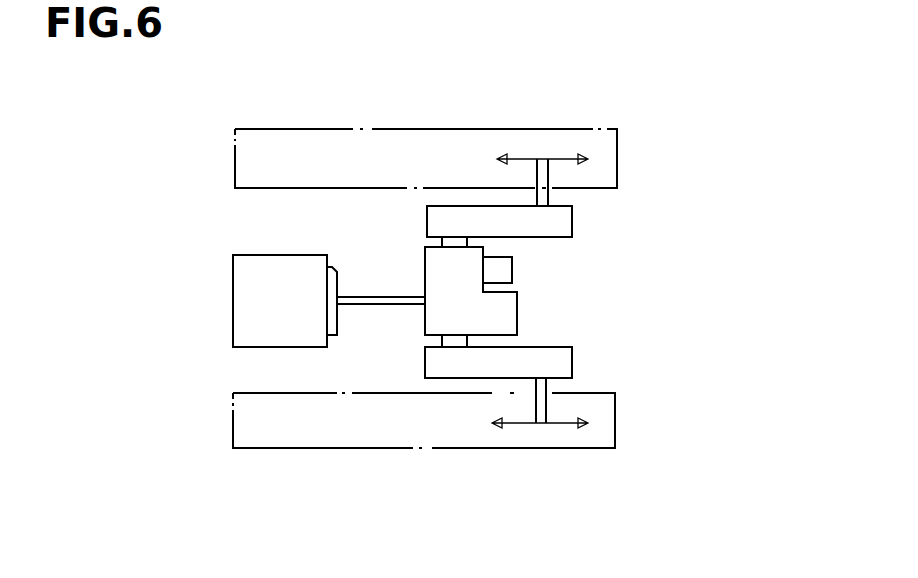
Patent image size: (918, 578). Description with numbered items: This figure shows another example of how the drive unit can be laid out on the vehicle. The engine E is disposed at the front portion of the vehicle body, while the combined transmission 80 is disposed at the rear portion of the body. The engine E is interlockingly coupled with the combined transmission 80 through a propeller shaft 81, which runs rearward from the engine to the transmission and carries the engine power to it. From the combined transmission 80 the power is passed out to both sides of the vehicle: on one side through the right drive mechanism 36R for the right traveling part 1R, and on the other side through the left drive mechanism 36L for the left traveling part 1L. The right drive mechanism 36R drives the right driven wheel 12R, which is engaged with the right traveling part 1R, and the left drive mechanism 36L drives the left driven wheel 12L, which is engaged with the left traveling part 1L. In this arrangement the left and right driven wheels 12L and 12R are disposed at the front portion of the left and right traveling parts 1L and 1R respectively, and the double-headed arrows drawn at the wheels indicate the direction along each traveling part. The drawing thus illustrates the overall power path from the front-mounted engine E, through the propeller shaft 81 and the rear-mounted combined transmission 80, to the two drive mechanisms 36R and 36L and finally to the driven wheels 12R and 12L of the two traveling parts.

The right traveling part 1R is at (447, 129).
The left traveling part 1L is at (270, 452).
The right driven wheel 12R is at (557, 159).
The left driven wheel 12L is at (567, 423).
The right drive mechanism 36R is at (572, 223).
The left drive mechanism 36L is at (572, 365).
The combined transmission 80 is at (517, 316).
The propeller shaft 81 is at (365, 291).
The engine E is at (233, 311).